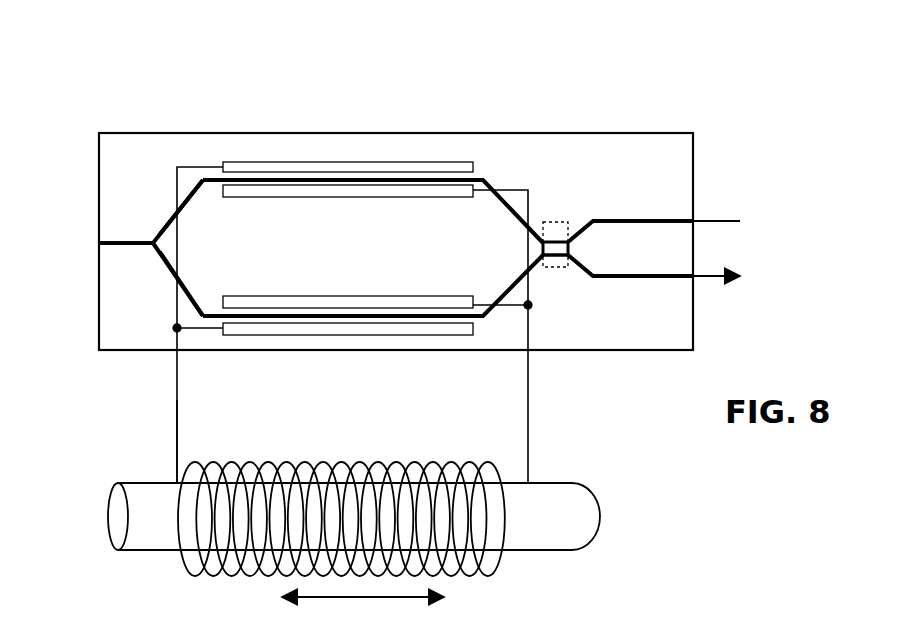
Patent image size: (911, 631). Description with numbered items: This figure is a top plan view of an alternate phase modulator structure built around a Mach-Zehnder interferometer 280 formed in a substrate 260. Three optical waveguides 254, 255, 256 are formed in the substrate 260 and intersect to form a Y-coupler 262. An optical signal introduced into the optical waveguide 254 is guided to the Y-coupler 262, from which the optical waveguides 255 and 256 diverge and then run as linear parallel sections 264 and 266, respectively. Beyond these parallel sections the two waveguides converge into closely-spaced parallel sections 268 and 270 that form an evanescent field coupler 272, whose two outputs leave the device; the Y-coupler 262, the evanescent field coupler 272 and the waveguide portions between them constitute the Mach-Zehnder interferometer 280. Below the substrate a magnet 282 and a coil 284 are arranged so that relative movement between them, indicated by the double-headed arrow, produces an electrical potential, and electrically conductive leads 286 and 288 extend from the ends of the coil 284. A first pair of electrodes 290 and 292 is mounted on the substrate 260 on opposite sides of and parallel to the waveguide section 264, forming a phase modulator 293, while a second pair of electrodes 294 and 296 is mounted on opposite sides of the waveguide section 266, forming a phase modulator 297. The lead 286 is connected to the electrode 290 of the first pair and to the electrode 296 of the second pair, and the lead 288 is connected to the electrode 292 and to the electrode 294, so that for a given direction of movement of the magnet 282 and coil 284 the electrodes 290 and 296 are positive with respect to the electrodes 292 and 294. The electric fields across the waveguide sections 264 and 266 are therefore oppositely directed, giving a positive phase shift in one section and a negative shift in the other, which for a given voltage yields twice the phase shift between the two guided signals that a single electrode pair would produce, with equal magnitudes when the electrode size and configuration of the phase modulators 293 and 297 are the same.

The Mach-Zehnder interferometer 280 is at (232, 90).
The optical waveguide 254 is at (117, 237).
The optical waveguide 255 is at (173, 217).
The optical waveguide 256 is at (170, 263).
The substrate 260 is at (275, 132).
The Y-coupler 262 is at (146, 229).
The linear parallel section 264 is at (398, 180).
The linear parallel section 266 is at (290, 318).
The closely-spaced parallel section 268 is at (550, 240).
The closely-spaced parallel section 270 is at (558, 258).
The evanescent field coupler 272 is at (572, 244).
The magnet 282 is at (600, 517).
The coil 284 is at (327, 461).
The electrically conductive lead 286 is at (175, 445).
The electrically conductive lead 288 is at (528, 372).
The electrode 290 is at (337, 161).
The electrode 292 is at (243, 198).
The phase modulator 293 is at (452, 143).
The electrode 294 is at (352, 296).
The electrode 296 is at (447, 323).
The phase modulator 297 is at (223, 344).